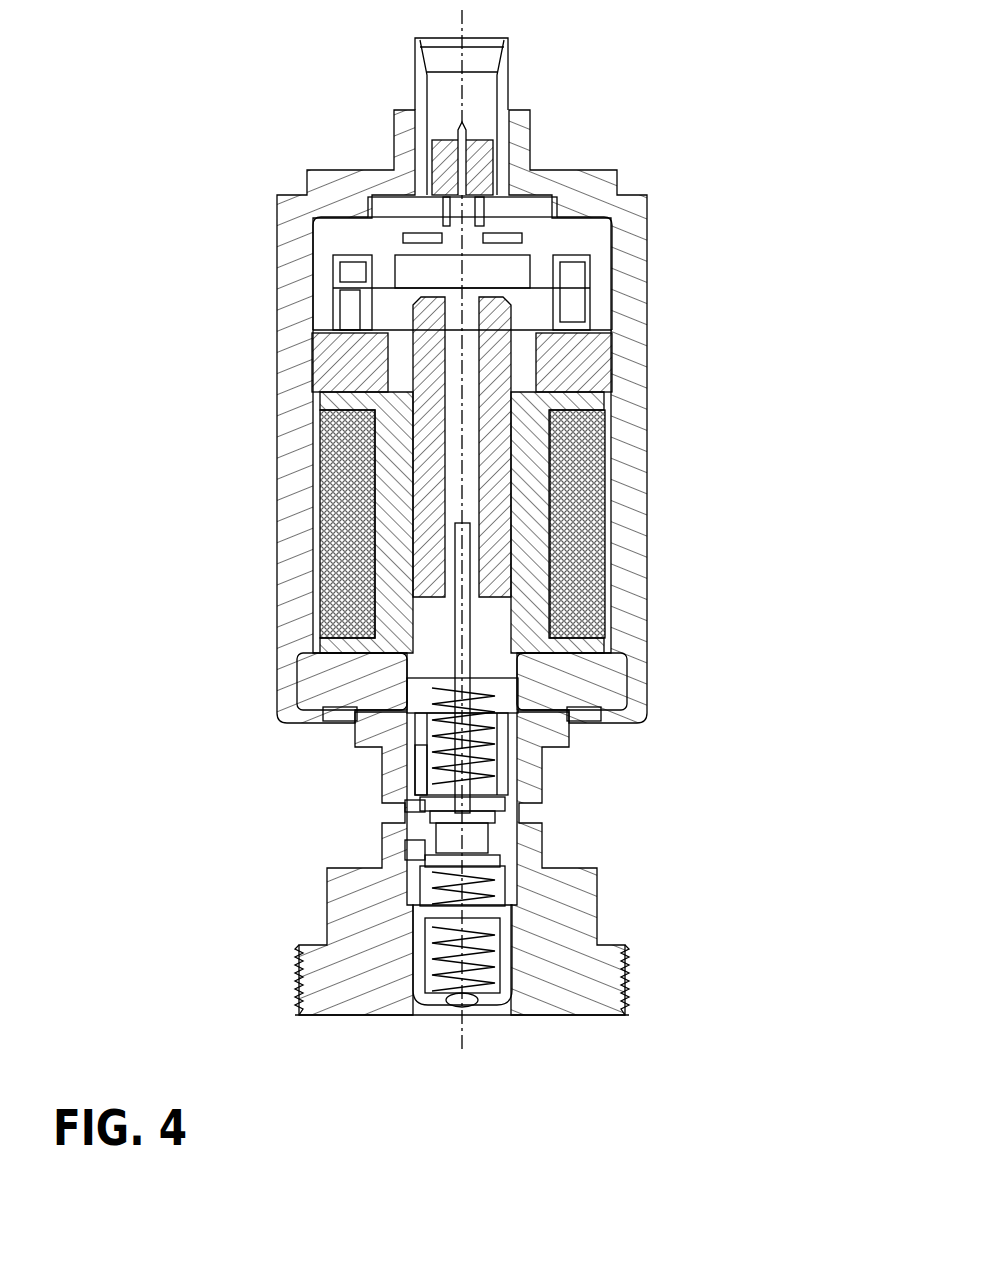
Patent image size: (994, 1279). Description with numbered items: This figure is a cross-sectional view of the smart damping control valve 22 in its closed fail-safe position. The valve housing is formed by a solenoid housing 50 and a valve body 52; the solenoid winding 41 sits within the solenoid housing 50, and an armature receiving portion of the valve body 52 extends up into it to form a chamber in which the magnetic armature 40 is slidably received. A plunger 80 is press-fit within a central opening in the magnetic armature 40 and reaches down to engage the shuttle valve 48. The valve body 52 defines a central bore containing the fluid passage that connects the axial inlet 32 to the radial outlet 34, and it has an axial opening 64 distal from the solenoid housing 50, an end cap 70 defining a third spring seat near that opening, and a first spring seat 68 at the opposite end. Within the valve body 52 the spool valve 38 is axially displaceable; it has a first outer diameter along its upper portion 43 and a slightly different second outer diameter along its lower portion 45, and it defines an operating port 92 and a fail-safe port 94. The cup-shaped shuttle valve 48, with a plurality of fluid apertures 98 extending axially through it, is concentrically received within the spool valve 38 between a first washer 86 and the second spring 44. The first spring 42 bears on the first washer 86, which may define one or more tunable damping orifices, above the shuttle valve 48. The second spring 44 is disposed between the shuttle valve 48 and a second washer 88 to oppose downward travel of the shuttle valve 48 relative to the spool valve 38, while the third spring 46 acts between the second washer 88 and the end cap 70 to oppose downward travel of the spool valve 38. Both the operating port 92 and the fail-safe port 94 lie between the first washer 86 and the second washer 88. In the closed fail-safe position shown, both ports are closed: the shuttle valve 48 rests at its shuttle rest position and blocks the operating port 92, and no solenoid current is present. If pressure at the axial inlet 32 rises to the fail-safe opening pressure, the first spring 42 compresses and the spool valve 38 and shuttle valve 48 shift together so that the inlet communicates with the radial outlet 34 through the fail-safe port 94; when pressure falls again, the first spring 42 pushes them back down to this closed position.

The smart damping control valve 22 is at (730, 227).
The solenoid housing 50 is at (599, 167).
The solenoid winding 41 is at (583, 497).
The magnetic armature 40 is at (430, 570).
The spool valve 38 is at (425, 742).
The radial outlet 34 is at (393, 815).
The plunger 80 is at (505, 712).
The first spring 42 is at (498, 740).
The first spring seat 68 is at (493, 682).
The first washer 86 is at (425, 782).
The operating port 92 is at (428, 806).
The fail-safe port 94 is at (425, 845).
The valve body 52 is at (535, 758).
The upper portion 43 is at (513, 787).
The shuttle valve 48 is at (532, 805).
The second spring 44 is at (530, 866).
The lower portion 45 is at (600, 880).
The second washer 88 is at (510, 893).
The third spring 46 is at (483, 983).
The end cap 70 is at (414, 955).
The fluid apertures 98 is at (450, 900).
The axial inlet 32 is at (452, 1005).
The axial opening 64 is at (482, 1020).